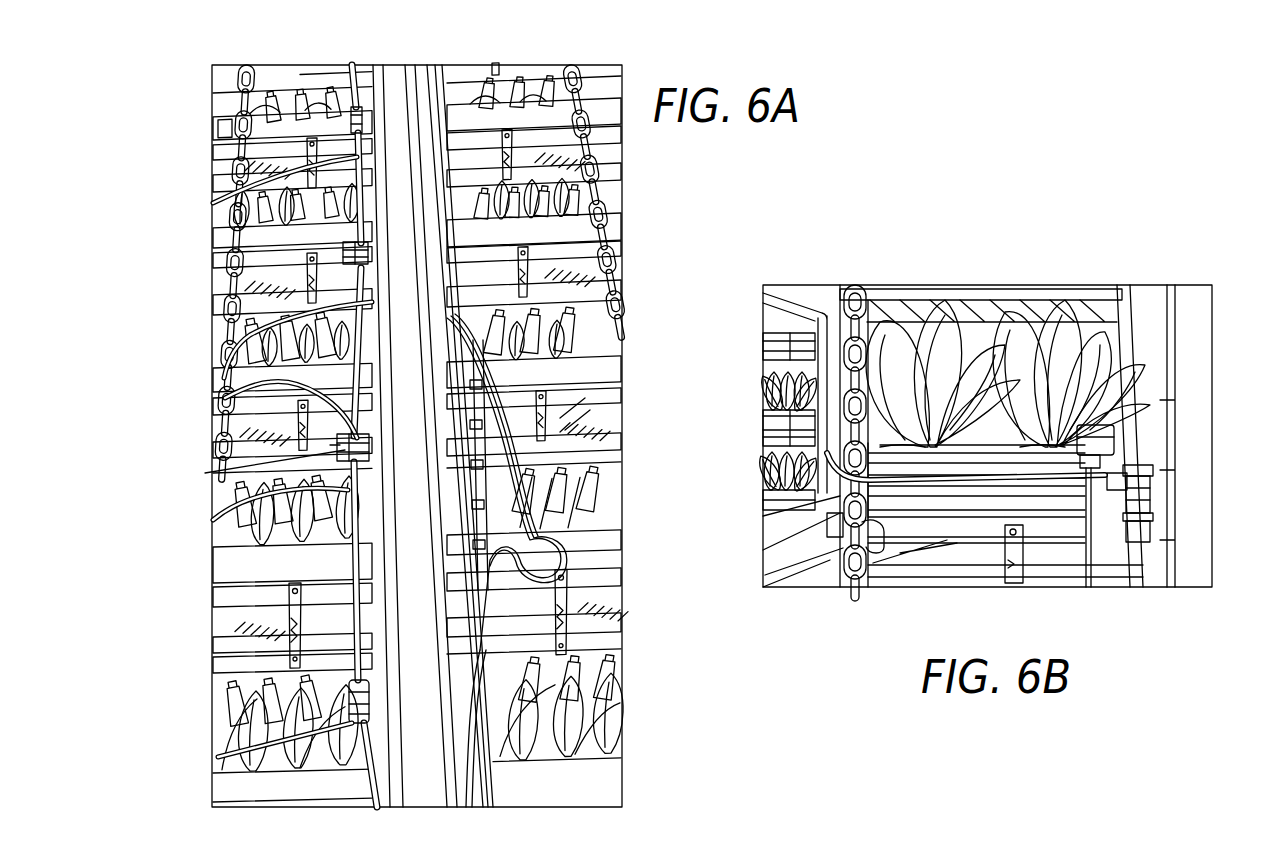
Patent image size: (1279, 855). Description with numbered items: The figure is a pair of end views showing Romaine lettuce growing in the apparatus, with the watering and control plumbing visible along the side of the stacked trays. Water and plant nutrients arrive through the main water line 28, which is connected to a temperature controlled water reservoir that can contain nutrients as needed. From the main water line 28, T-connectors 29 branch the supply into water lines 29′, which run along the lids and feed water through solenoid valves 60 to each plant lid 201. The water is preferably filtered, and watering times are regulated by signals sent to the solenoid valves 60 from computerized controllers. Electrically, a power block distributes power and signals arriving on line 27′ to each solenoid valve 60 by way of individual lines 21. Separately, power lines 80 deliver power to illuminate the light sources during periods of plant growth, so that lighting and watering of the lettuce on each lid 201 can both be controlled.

In FIG. 6A, the main water line 28 is at (355, 80).
In FIG. 6B, the main water line 28 is at (1130, 343).
In FIG. 6A, the water lines 29′ is at (248, 318).
In FIG. 6B, the water lines 29′ is at (843, 465).
In FIG. 6A, the T-connectors 29 is at (262, 391).
In FIG. 6B, the T-connectors 29 is at (1150, 500).
In FIG. 6A, the power lines 80 is at (338, 445).
In FIG. 6A, the individual lines 21 is at (240, 544).
In FIG. 6B, the individual lines 21 is at (1095, 572).
In FIG. 6A, the line 27′ is at (580, 553).
In FIG. 6B, the solenoid valves 60 is at (1118, 447).
In FIG. 6B, the plant lids 201 is at (970, 453).